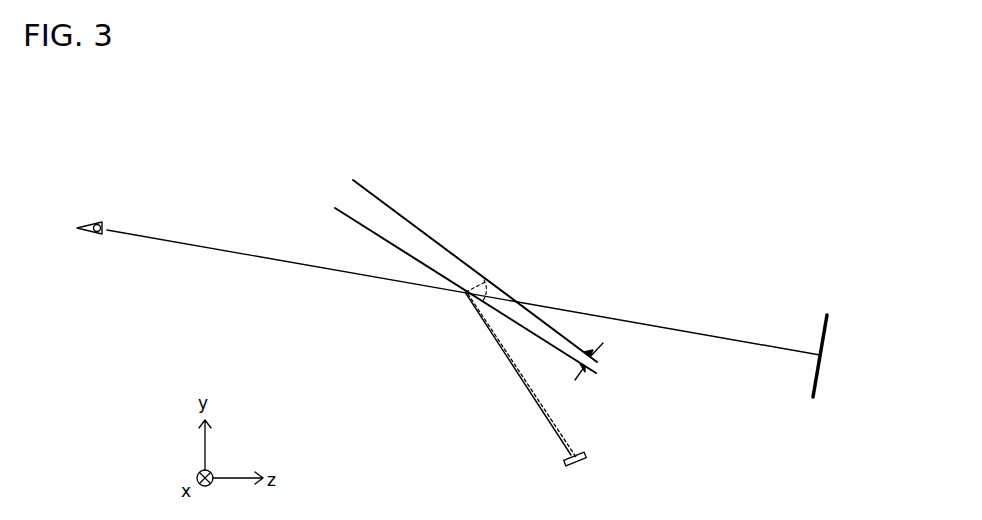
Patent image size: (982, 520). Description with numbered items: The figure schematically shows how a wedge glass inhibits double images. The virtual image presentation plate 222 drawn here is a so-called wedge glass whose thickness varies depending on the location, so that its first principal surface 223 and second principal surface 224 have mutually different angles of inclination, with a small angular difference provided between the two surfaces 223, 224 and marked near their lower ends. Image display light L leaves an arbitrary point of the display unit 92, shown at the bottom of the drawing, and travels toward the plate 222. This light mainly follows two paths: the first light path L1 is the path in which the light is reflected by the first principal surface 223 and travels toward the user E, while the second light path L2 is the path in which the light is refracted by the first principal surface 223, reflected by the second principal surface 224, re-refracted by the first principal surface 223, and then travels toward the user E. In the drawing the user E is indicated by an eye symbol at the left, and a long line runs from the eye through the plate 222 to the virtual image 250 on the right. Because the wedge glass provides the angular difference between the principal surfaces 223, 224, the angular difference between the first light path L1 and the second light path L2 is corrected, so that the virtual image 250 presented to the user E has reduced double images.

The virtual image presentation plate 222 is at (444, 243).
The first principal surface 223 is at (376, 236).
The second principal surface 224 is at (393, 208).
The virtual image 250 is at (833, 291).
The display unit 92 is at (586, 452).
The user E is at (92, 221).
The light L is at (513, 374).
The first light path L1 is at (507, 362).
The second light path L2 is at (505, 352).